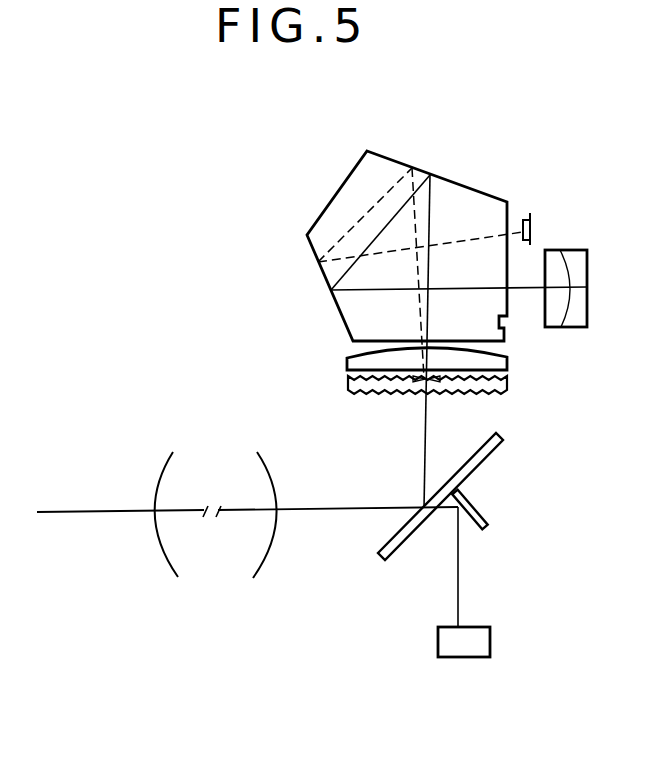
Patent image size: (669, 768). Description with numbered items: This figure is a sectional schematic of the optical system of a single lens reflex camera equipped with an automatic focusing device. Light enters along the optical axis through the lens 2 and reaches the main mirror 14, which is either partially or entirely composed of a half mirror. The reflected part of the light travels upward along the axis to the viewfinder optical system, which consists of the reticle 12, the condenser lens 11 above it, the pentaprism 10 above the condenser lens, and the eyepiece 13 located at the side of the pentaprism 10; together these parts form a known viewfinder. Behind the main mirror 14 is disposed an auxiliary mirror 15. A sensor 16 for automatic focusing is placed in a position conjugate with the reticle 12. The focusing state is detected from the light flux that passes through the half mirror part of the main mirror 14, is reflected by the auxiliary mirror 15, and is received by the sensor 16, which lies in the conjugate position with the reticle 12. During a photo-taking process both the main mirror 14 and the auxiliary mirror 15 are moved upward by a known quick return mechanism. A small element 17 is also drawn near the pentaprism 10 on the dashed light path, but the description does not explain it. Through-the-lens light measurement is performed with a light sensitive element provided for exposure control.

The lens 2 is at (222, 563).
The pentaprism 10 is at (392, 160).
The condenser lens 11 is at (348, 363).
The reticle 12 is at (352, 385).
The eyepiece 13 is at (576, 253).
The main mirror 14 is at (502, 442).
The auxiliary mirror 15 is at (488, 522).
The sensor 16 is at (490, 643).
The light source 17 is at (533, 222).